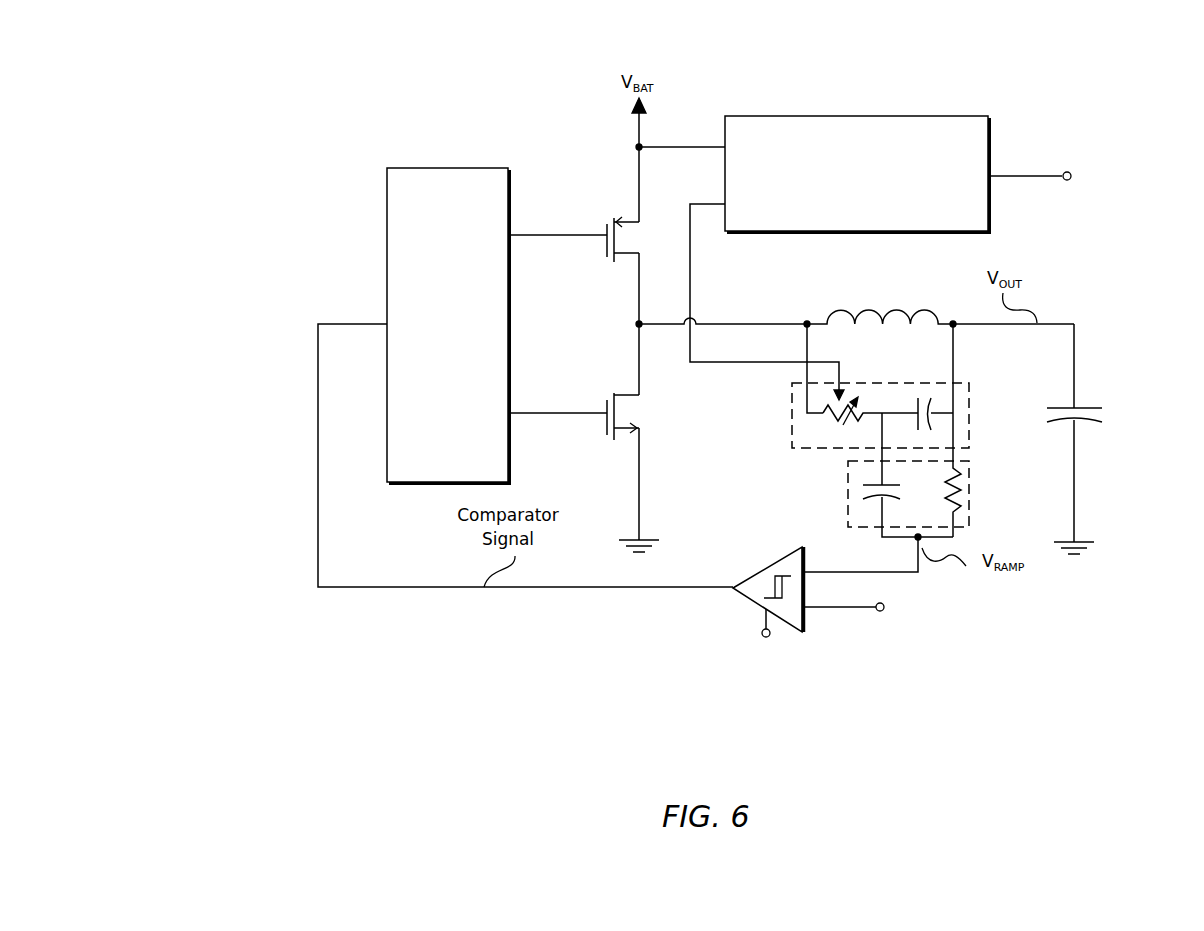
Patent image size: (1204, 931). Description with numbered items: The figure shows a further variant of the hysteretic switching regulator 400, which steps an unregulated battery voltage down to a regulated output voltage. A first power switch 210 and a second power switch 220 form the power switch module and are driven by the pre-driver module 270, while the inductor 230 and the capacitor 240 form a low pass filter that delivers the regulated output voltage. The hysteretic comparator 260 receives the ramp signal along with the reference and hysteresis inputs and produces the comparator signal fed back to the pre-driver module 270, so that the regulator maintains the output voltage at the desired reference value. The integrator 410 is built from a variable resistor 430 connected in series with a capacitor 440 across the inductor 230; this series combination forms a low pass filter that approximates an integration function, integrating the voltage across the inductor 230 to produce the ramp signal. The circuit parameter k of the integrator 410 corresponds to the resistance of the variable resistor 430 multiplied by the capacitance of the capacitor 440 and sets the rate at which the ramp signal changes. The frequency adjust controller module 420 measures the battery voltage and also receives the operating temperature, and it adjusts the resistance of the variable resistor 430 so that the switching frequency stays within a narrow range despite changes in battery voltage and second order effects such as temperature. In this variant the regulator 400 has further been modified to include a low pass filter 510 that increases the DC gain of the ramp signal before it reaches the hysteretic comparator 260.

The first power switch 210 is at (630, 213).
The second power switch 220 is at (630, 393).
The inductor 230 is at (880, 304).
The capacitor 240 is at (1096, 439).
The hysteretic comparator 260 is at (772, 557).
The pre-driver module 270 is at (449, 326).
The hysteretic switching regulator 400 is at (355, 723).
The integrator 410 is at (877, 387).
The frequency adjust controller module 420 is at (959, 174).
The variable resistor 430 is at (823, 433).
The capacitor 440 is at (944, 440).
The low pass filter 510 is at (848, 488).